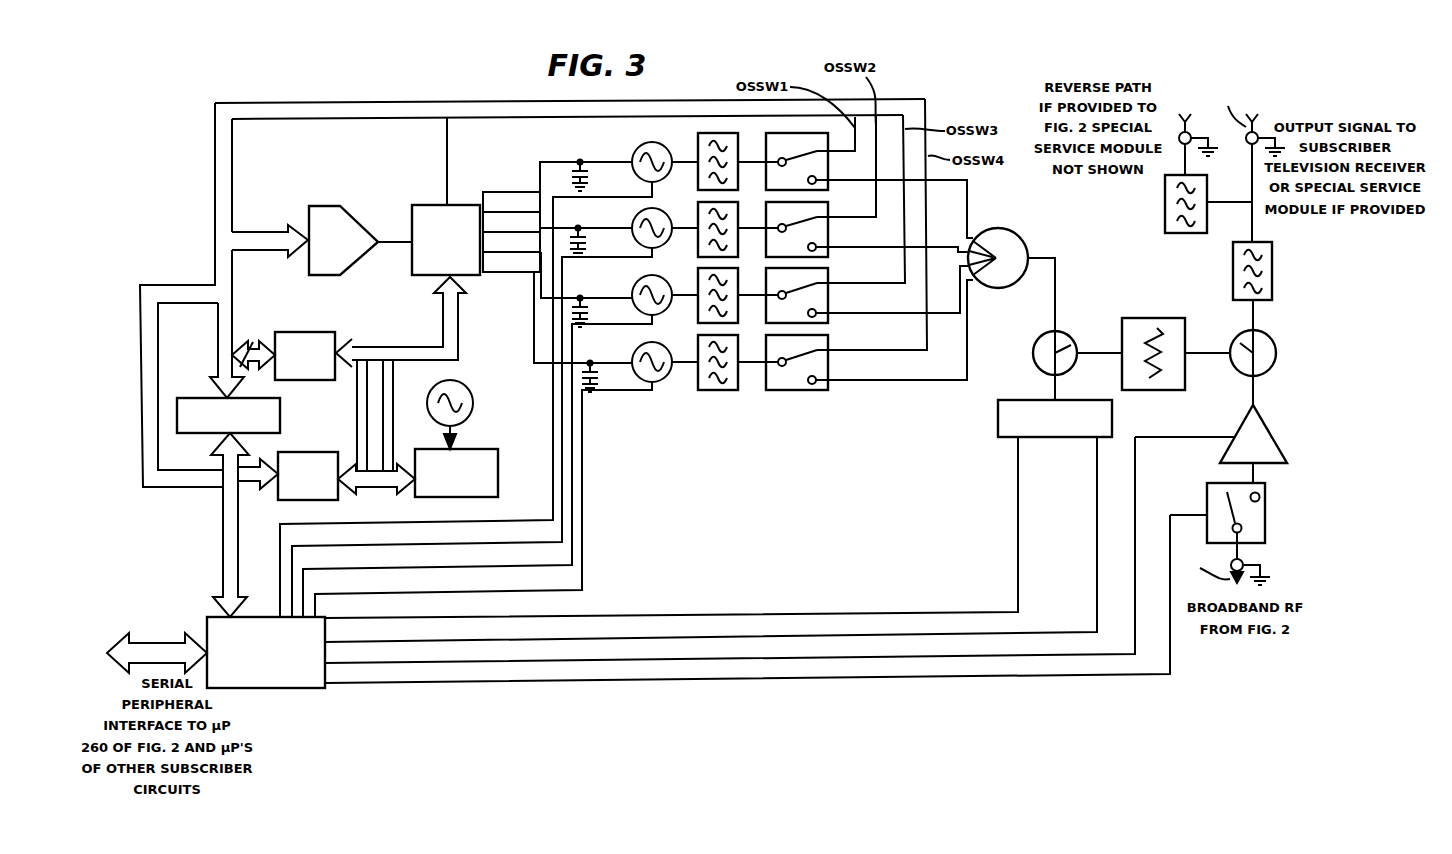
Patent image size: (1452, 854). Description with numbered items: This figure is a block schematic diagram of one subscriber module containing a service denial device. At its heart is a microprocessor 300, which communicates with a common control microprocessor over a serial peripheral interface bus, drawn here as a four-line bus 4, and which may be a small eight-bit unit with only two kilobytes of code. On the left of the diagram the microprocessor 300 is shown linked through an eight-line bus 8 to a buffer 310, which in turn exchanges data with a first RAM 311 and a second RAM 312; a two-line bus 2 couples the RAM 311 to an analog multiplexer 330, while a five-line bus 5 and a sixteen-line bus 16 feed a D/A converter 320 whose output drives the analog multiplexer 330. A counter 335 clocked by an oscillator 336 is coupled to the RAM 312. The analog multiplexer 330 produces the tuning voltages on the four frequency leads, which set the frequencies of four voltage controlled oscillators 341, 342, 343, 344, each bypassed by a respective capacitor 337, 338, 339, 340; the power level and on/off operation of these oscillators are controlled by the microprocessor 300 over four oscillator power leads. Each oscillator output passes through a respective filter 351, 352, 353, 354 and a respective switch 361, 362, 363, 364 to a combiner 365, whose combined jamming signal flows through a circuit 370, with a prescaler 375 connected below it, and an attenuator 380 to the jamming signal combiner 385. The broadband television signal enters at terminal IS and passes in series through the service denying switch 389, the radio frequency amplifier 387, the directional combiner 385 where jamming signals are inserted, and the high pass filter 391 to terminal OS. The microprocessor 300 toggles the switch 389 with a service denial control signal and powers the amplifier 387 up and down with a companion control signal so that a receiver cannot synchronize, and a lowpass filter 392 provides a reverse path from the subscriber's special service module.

The two-line bus between RAM and analog multiplexer 2 is at (437, 332).
The four-line serial peripheral interface bus 4 is at (148, 665).
The five-line bus to D/A converter 5 is at (207, 180).
The eight-line bus between buffer and microprocessor 8 is at (213, 552).
The sixteen-line bus to D/A converter 16 is at (213, 278).
The microprocessor 300 is at (318, 689).
The buffer 310 is at (133, 410).
The RAM 311 is at (290, 332).
The RAM 312 is at (292, 452).
The D/A converter 320 is at (326, 206).
The analog multiplexer 330 is at (425, 205).
The counter 335 is at (498, 485).
The clock oscillator 336 is at (473, 403).
The capacitor for OSC1 337 is at (574, 168).
The capacitor for OSC2 338 is at (571, 236).
The capacitor for OSC3 339 is at (573, 306).
The capacitor for OSC4 340 is at (601, 378).
The voltage controlled oscillator 341 is at (637, 176).
The voltage controlled oscillator 342 is at (638, 242).
The voltage controlled oscillator 343 is at (638, 309).
The voltage controlled oscillator 344 is at (667, 378).
The filter 351 is at (698, 152).
The filter 352 is at (698, 217).
The filter 353 is at (698, 282).
The filter 354 is at (698, 350).
The switch 361 is at (829, 170).
The switch 362 is at (829, 236).
The switch 363 is at (829, 304).
The switch 364 is at (829, 372).
The combiner 365 is at (996, 229).
The mixer 370 is at (1036, 347).
The prescaler 375 is at (998, 430).
The attenuator 380 is at (1160, 318).
The jamming signal combiner 385 is at (1275, 364).
The radio frequency amplifier 387 is at (1243, 428).
The service denying switch 389 is at (1207, 492).
The high pass filter 391 is at (1274, 288).
The lowpass filter 392 is at (1165, 213).